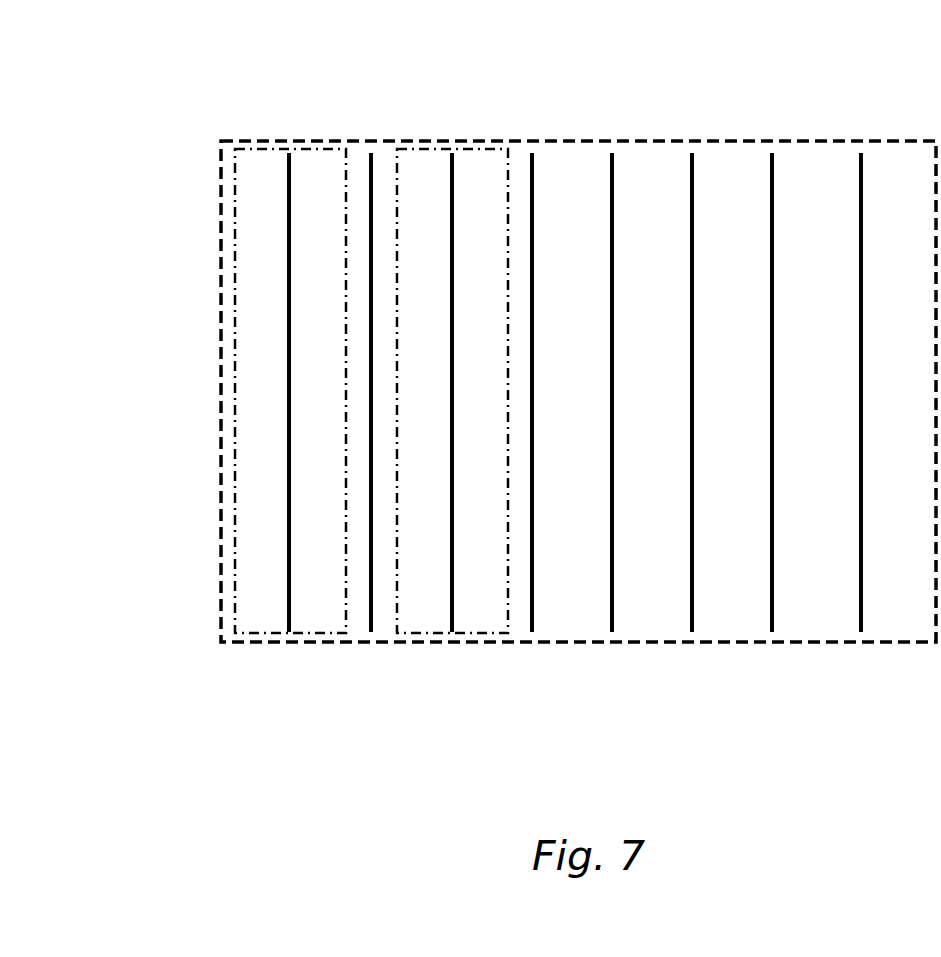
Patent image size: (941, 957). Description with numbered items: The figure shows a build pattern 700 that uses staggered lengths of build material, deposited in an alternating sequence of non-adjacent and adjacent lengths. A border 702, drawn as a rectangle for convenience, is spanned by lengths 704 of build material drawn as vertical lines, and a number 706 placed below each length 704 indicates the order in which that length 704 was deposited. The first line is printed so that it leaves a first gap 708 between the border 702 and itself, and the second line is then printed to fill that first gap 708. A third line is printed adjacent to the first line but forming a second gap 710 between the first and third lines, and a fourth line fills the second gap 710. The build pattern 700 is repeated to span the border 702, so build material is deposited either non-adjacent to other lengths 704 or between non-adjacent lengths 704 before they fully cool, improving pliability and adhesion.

The build pattern 700 is at (148, 97).
The border 702 is at (220, 278).
The lengths of build material 704 is at (289, 440).
The number 706 is at (287, 690).
The first gap 708 is at (345, 180).
The second gap 710 is at (508, 180).